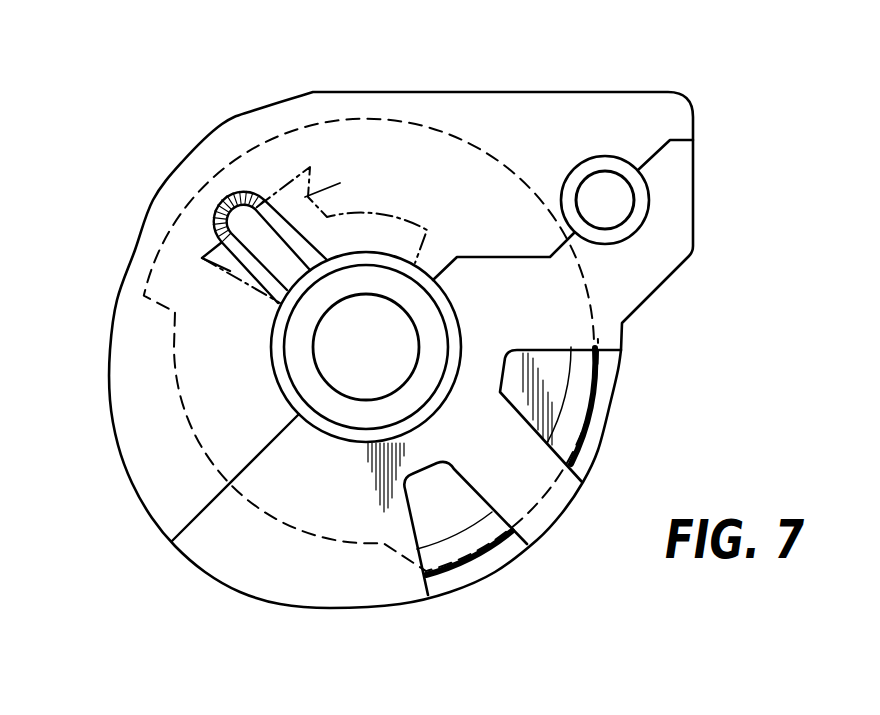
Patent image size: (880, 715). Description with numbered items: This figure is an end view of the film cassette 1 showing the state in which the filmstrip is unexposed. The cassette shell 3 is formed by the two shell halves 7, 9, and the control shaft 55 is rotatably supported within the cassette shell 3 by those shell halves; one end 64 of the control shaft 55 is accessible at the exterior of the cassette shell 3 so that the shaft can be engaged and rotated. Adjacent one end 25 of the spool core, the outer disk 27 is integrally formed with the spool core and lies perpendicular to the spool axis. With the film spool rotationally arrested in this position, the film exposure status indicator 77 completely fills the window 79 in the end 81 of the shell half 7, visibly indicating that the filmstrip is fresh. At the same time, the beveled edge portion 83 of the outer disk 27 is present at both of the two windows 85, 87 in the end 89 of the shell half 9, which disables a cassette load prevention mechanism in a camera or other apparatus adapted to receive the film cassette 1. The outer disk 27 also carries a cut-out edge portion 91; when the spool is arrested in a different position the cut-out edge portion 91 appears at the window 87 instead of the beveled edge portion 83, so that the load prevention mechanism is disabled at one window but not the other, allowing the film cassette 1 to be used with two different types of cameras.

The film cassette 1 is at (222, 127).
The cassette shell 3 is at (153, 205).
The shell half 7 is at (316, 92).
The shell half 9 is at (374, 604).
The end of the spool core 25 is at (283, 380).
The outer disk 27 is at (166, 250).
The control shaft 55 is at (611, 156).
The end of the control shaft 64 is at (648, 200).
The film exposure status indicator 77 is at (366, 172).
The window 79 is at (259, 277).
The end of the shell half 81 is at (143, 410).
The beveled edge portion 83 is at (590, 418).
The window 85 is at (548, 352).
The window 87 is at (481, 500).
The end of the shell half 89 is at (247, 542).
The cut-out edge portion 91 is at (312, 546).